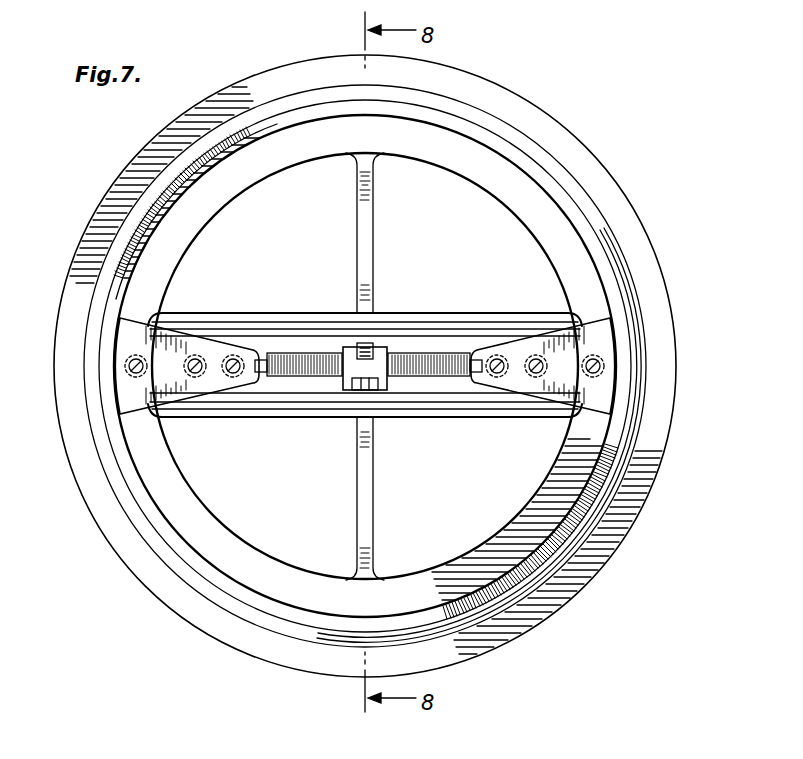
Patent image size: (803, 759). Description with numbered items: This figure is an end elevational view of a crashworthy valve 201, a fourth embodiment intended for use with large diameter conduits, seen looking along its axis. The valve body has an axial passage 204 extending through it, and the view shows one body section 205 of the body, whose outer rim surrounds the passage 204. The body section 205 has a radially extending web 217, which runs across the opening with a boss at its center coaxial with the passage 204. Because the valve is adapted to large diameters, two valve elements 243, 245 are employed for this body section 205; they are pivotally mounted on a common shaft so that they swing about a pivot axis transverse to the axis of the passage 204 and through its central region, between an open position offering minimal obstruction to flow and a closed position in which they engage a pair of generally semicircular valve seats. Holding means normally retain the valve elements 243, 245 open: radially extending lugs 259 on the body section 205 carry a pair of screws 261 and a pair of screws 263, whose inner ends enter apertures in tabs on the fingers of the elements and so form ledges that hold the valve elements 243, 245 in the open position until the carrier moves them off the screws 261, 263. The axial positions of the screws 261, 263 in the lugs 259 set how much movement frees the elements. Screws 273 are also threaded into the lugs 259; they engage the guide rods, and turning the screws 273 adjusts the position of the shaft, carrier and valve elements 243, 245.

The crashworthy valve 201 is at (588, 134).
The axial passage 204 is at (448, 207).
The body section 205 is at (620, 219).
The web 217 is at (372, 240).
The valve element 243 is at (331, 314).
The valve element 245 is at (335, 417).
The lugs 259 is at (137, 398).
The screws 261 is at (198, 355).
The screws 263 is at (237, 377).
The screws 273 is at (128, 368).